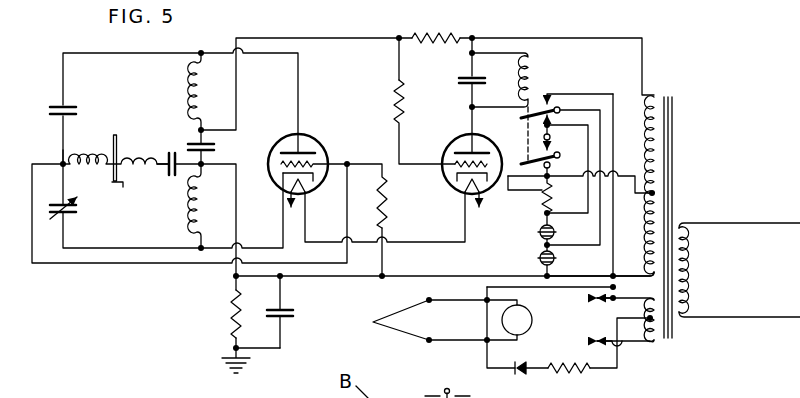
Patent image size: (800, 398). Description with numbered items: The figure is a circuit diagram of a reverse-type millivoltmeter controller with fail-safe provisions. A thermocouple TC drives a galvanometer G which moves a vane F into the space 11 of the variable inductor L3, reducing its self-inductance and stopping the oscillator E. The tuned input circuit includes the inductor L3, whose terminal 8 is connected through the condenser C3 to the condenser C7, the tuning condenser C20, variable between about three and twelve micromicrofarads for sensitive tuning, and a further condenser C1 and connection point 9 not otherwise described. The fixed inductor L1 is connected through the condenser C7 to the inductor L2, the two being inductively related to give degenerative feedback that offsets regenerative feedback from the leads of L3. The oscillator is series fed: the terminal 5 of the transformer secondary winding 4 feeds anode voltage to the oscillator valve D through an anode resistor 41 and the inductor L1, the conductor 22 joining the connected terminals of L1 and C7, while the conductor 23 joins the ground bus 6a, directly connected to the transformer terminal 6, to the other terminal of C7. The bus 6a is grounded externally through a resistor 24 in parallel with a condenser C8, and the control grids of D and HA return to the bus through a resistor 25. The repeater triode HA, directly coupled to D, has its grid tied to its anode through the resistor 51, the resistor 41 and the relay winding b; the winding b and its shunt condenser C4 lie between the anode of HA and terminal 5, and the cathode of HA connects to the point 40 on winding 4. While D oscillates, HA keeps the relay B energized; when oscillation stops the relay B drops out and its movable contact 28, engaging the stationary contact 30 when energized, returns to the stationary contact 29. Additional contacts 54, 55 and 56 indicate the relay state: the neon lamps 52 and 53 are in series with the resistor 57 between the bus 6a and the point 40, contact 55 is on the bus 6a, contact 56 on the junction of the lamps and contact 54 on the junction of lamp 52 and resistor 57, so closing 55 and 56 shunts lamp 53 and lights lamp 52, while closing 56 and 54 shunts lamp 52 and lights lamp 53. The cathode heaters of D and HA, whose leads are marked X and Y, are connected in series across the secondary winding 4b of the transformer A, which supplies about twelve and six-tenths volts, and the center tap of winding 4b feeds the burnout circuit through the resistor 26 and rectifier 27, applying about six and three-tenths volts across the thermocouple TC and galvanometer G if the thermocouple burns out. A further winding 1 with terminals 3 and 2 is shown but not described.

The capacitor C1 is at (75, 111).
The connection point 9 is at (68, 158).
The vane F is at (118, 138).
The terminal 8 is at (166, 156).
The space 11 is at (130, 185).
The variable inductor L3 is at (102, 172).
The input circuit tuning condenser C20 is at (78, 210).
The condenser C3 is at (174, 177).
The fixed inductor L1 is at (197, 96).
The inductor L2 is at (197, 206).
The condenser C7 is at (215, 146).
The conductor 22 is at (238, 97).
The conductor 23 is at (238, 208).
The resistor 24 is at (231, 312).
The condenser C8 is at (296, 311).
The oscillator valve D is at (318, 138).
The heater terminal X is at (450, 251).
The resistor 25 is at (388, 205).
The oscillator E is at (128, 270).
The resistor 51 is at (396, 85).
The anode resistor 41 is at (447, 44).
The shunt condenser C4 is at (460, 80).
The repeater stage triode valve HA is at (447, 141).
The heater terminal Y is at (546, 270).
The transformer terminal 5 is at (590, 36).
The relay winding b is at (520, 78).
The relay B is at (556, 70).
The relay contact 55 is at (548, 90).
The relay contact 56 is at (520, 119).
The relay contact 54 is at (553, 121).
The second stationary contact 30 is at (551, 137).
The movable contact 28 is at (529, 153).
The stationary contact 29 is at (551, 165).
The resistor 57 is at (544, 196).
The neon signal lamp 52 is at (539, 232).
The neon signal lamp 53 is at (539, 258).
The ground bus 6a is at (594, 272).
The transformer terminal 6 is at (638, 272).
The point 40 is at (648, 195).
The transformer secondary winding 4 is at (646, 152).
The transformer A is at (681, 112).
The secondary lead 3 is at (707, 226).
The transformer secondary winding 1 is at (687, 262).
The secondary lead 2 is at (718, 312).
The transformer secondary winding 4b is at (648, 306).
The resistor 26 is at (575, 364).
The rectifier 27 is at (524, 373).
The thermocouple TC is at (397, 332).
The galvanometer G is at (517, 320).